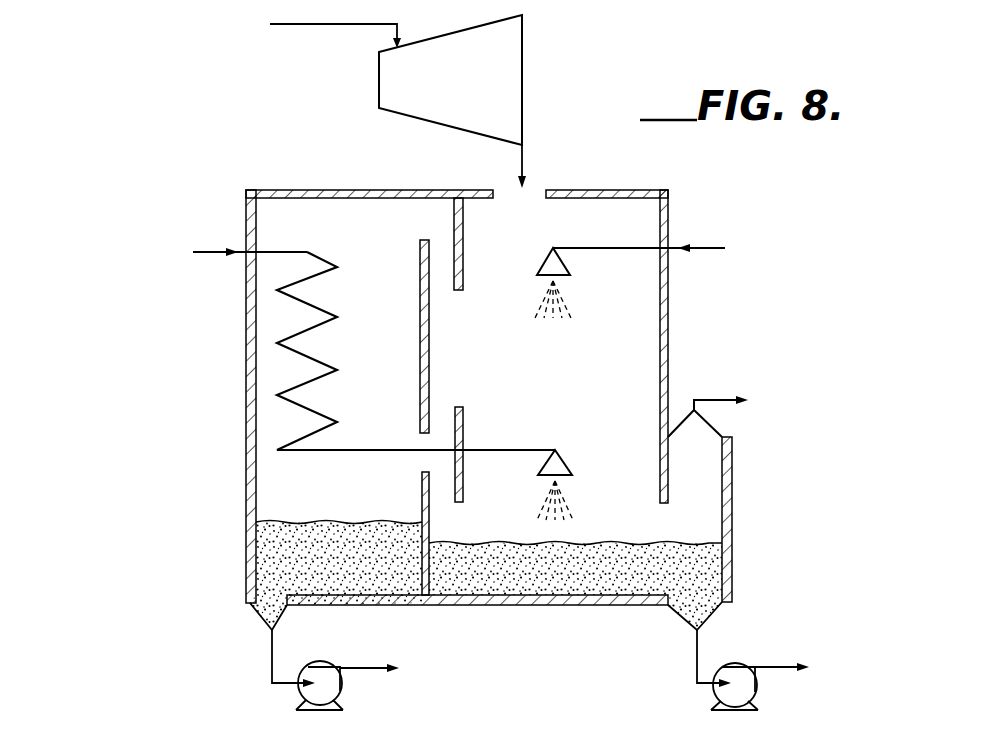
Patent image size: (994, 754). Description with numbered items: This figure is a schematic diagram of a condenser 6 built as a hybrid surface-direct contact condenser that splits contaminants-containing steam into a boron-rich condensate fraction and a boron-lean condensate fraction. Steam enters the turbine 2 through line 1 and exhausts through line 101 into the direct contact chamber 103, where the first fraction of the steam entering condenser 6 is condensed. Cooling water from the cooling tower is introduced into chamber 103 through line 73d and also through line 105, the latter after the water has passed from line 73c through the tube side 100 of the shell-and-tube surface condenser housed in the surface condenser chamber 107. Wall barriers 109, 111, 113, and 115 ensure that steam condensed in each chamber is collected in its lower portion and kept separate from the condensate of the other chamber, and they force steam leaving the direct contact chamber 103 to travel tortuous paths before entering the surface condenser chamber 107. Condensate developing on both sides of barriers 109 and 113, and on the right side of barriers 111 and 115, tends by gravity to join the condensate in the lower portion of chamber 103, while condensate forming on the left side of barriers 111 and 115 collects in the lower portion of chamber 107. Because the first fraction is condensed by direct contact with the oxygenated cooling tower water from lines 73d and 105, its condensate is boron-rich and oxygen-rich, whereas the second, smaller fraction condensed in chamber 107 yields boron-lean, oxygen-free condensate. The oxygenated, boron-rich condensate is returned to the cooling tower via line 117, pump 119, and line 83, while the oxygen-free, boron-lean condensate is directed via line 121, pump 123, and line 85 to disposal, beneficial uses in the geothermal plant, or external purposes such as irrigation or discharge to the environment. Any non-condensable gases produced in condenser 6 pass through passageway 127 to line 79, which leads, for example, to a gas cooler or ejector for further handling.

The line 1 is at (333, 24).
The turbine 2 is at (467, 121).
The condenser 6 is at (310, 190).
The line 101 is at (522, 160).
The wall barrier 109 is at (463, 266).
The wall barrier 111 is at (429, 371).
The wall barrier 113 is at (463, 414).
The wall barrier 115 is at (422, 487).
The surface condenser chamber 107 is at (398, 340).
The direct contact chamber 103 is at (584, 381).
The passageway 127 is at (713, 488).
The tube side 100 is at (325, 376).
The line 73c is at (222, 258).
The line 73d is at (623, 248).
The line 105 is at (507, 447).
The line 79 is at (705, 399).
The line 121 is at (272, 653).
The pump 123 is at (320, 667).
The line 85 is at (370, 670).
The line 117 is at (697, 645).
The pump 119 is at (718, 690).
The line 83 is at (768, 665).